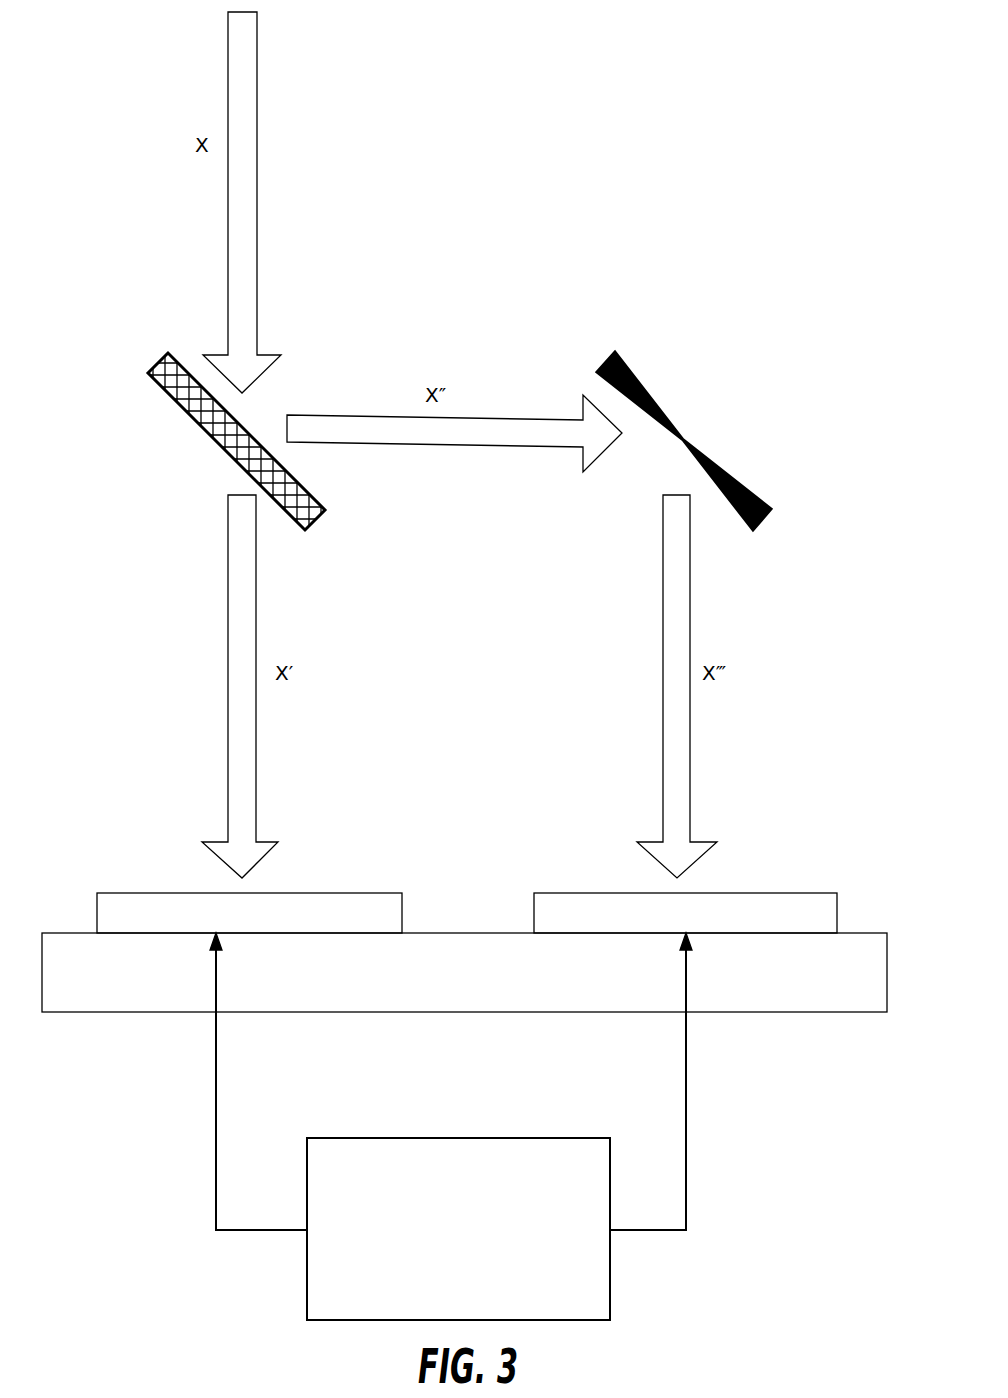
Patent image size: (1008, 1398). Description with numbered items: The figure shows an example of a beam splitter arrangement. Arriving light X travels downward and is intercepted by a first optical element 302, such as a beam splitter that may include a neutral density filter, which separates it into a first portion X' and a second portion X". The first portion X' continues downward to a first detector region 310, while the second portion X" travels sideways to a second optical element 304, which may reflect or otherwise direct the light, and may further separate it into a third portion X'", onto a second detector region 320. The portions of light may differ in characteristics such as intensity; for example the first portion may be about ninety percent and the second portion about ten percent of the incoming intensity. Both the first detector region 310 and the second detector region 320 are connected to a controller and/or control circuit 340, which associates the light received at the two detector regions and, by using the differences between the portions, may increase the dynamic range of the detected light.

The first optical element 302 is at (227, 453).
The second optical element 304 is at (677, 458).
The first detector region 310 is at (162, 892).
The second detector region 320 is at (602, 892).
The controller and/or control circuit 340 is at (510, 1138).